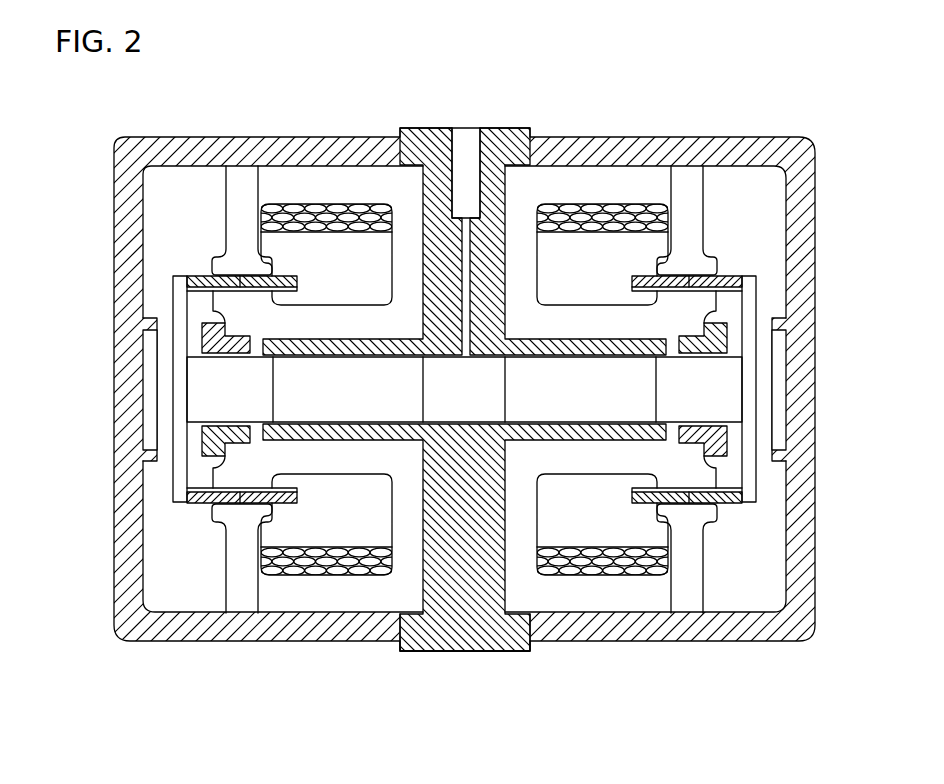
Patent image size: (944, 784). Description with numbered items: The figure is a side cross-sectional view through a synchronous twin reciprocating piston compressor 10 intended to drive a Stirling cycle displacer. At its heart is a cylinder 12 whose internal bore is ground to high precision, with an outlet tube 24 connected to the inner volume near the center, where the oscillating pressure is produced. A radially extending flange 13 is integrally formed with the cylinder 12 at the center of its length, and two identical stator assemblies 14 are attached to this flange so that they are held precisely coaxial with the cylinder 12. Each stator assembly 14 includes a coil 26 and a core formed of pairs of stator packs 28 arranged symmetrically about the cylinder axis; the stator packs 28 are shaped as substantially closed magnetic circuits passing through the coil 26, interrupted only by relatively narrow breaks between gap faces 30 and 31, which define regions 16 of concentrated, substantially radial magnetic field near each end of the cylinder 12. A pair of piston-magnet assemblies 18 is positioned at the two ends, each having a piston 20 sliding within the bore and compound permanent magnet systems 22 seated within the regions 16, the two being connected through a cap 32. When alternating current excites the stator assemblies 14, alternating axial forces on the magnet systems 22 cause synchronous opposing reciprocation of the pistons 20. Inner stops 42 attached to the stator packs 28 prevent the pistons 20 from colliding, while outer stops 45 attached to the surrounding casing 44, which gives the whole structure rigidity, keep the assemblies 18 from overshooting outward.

The compressor 10 is at (744, 88).
The cylinder 12 is at (417, 433).
The radially extending flange 13 is at (489, 630).
The stator assembly 14 is at (248, 178).
The region 16 is at (199, 264).
The piston-magnet assembly 18 is at (165, 506).
The piston 20 is at (305, 410).
The compound permanent magnet system 22 is at (200, 505).
The outlet tube 24 is at (467, 170).
The coil 26 is at (303, 204).
The stator pack 28 is at (367, 166).
The gap face 30 is at (230, 294).
The gap face 31 is at (244, 268).
The cap 32 is at (177, 475).
The inner stop 42 is at (730, 438).
The casing 44 is at (805, 277).
The outer stop 45 is at (786, 357).